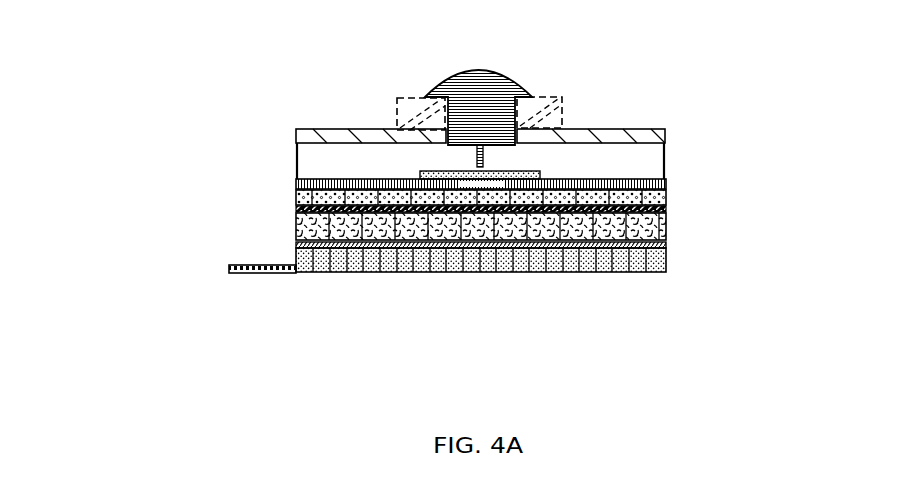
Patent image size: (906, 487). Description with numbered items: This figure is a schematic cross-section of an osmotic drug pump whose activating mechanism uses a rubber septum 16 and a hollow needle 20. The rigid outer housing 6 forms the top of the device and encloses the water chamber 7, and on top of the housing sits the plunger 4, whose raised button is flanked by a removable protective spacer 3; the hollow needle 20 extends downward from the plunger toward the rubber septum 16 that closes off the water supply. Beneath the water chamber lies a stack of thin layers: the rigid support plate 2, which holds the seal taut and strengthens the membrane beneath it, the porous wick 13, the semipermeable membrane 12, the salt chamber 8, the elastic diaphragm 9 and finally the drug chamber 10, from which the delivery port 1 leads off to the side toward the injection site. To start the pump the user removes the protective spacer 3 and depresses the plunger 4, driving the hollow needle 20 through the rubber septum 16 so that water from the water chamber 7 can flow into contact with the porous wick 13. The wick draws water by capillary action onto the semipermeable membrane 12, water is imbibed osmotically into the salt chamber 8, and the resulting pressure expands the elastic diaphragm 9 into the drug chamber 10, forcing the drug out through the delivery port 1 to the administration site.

The delivery port 1 is at (268, 275).
The rigid support plate 2 is at (668, 180).
The protective spacer 3 is at (558, 94).
The plunger 4 is at (481, 67).
The outer housing 6 is at (388, 127).
The water chamber 7 is at (345, 163).
The salt chamber 8 is at (292, 223).
The elastic diaphragm 9 is at (672, 244).
The drug chamber 10 is at (470, 273).
The semipermeable membrane 12 is at (670, 205).
The porous wick 13 is at (293, 197).
The rubber septum 16 is at (531, 167).
The hollow needle 20 is at (486, 157).